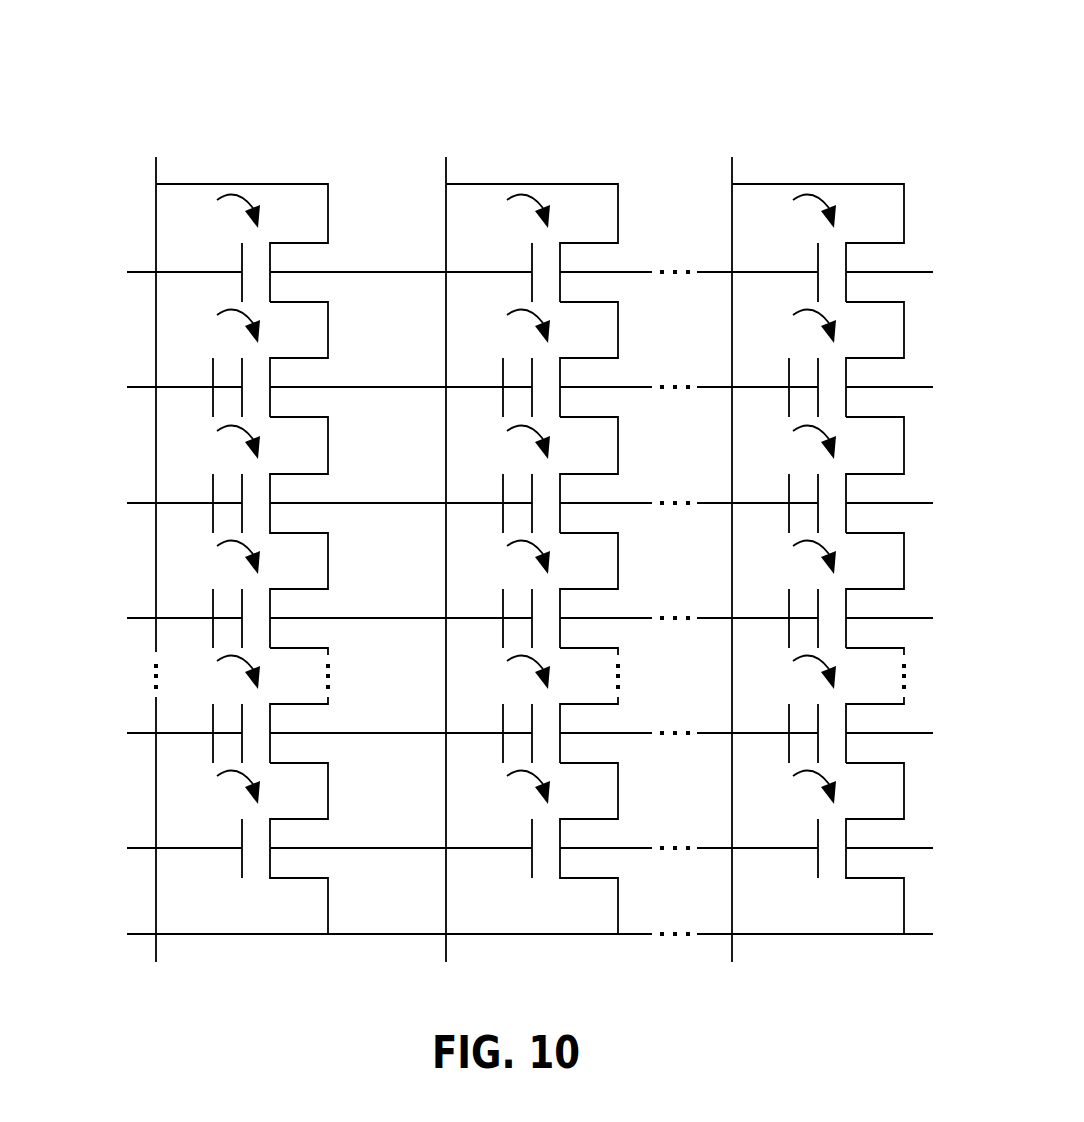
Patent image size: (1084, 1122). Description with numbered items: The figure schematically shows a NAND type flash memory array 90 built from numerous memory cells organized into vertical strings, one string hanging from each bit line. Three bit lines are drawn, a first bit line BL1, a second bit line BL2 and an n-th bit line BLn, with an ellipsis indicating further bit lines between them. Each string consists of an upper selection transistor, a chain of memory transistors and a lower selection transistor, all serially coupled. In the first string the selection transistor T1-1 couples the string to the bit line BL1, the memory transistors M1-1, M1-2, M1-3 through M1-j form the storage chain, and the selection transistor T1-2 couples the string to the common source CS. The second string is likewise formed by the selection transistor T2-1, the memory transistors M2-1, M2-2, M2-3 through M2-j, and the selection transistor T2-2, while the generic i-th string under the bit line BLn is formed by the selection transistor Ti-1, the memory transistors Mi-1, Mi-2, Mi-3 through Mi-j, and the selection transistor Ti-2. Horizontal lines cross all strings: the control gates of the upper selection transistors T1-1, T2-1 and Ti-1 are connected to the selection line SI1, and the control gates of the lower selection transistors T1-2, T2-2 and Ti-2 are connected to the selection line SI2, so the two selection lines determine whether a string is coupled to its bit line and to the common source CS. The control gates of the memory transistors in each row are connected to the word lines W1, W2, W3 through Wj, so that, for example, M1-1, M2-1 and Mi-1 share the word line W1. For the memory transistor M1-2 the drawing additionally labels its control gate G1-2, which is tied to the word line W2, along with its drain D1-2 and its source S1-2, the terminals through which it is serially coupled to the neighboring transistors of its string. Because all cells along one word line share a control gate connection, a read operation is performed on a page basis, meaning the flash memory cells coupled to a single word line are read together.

The NAND type flash memory array 90 is at (447, 50).
The bit line BL1 is at (159, 538).
The bit line BL2 is at (447, 538).
The bit line BLn is at (731, 538).
The selection line SI1 is at (496, 269).
The selection line SI2 is at (496, 847).
The word line W1 is at (494, 384).
The word line W2 is at (494, 501).
The word line W3 is at (494, 615).
The word line Wj is at (495, 731).
The common source CS is at (497, 934).
The selection transistor T1-1 is at (242, 243).
The selection transistor T1-2 is at (252, 848).
The selection transistor T2-1 is at (532, 243).
The selection transistor T2-2 is at (542, 848).
The selection transistor Ti-1 is at (818, 243).
The selection transistor Ti-2 is at (831, 848).
The memory transistor M1-1 is at (253, 359).
The memory transistor M1-2 is at (256, 480).
The memory transistor M1-3 is at (253, 590).
The memory transistor M1-j is at (254, 705).
The memory transistor M2-1 is at (543, 359).
The memory transistor M2-2 is at (543, 475).
The memory transistor M2-3 is at (543, 590).
The memory transistor M2-j is at (544, 705).
The memory transistor Mi-1 is at (831, 359).
The memory transistor Mi-2 is at (831, 475).
The memory transistor Mi-3 is at (831, 590).
The memory transistor Mi-j is at (832, 705).
The control gate G1-2 is at (212, 489).
The drain of memory cell transistor M1-2 D1-2 is at (303, 475).
The source of memory cell transistor M1-2 S1-2 is at (318, 532).